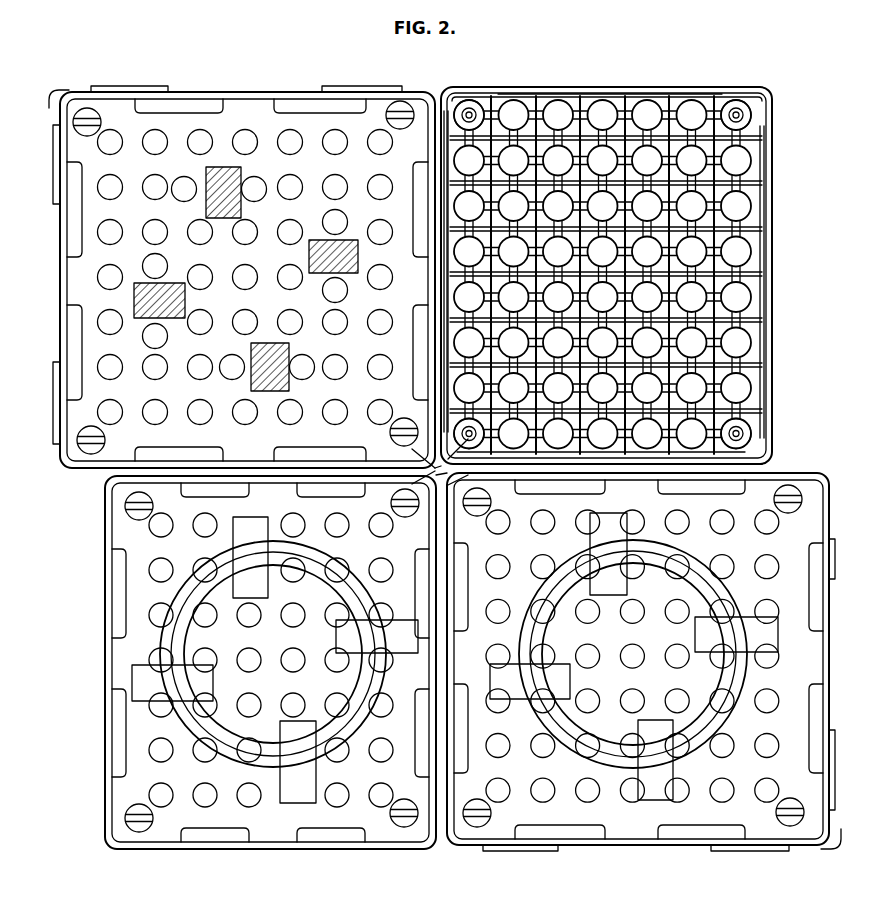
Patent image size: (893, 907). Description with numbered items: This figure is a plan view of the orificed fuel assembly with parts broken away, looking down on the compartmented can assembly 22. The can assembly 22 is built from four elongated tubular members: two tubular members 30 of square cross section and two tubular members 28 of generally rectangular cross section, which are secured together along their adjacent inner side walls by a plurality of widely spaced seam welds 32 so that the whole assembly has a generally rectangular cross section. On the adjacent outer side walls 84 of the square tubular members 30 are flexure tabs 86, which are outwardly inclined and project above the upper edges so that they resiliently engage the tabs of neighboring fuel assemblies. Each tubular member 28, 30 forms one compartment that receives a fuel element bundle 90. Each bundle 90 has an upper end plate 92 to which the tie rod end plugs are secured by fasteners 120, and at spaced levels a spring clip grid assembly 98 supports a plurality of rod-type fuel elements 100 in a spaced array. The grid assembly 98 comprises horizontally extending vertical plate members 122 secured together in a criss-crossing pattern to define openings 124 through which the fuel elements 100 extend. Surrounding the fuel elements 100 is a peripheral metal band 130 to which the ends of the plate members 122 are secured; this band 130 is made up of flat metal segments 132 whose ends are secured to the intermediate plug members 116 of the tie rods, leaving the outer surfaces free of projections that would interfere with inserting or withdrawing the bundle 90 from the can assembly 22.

The compartmented can assembly 22 is at (104, 653).
The tubular member of generally rectangular cross section 28 is at (621, 79).
The tubular member of square cross section 30 is at (230, 84).
The seam weld 32 is at (426, 78).
The outer side wall 84 is at (51, 91).
The flexure tab 86 is at (118, 78).
The fuel element bundle 90 is at (279, 101).
The upper end plate 92 is at (72, 268).
The spring clip grid assembly 98 is at (756, 381).
The rod-type fuel element 100 is at (734, 246).
The intermediate plug member 116 is at (463, 91).
The fastener 120 is at (389, 93).
The vertical plate member 122 is at (543, 90).
The opening 124 is at (748, 365).
The peripheral metal band 130 is at (666, 80).
The flat metal segment 132 is at (579, 88).